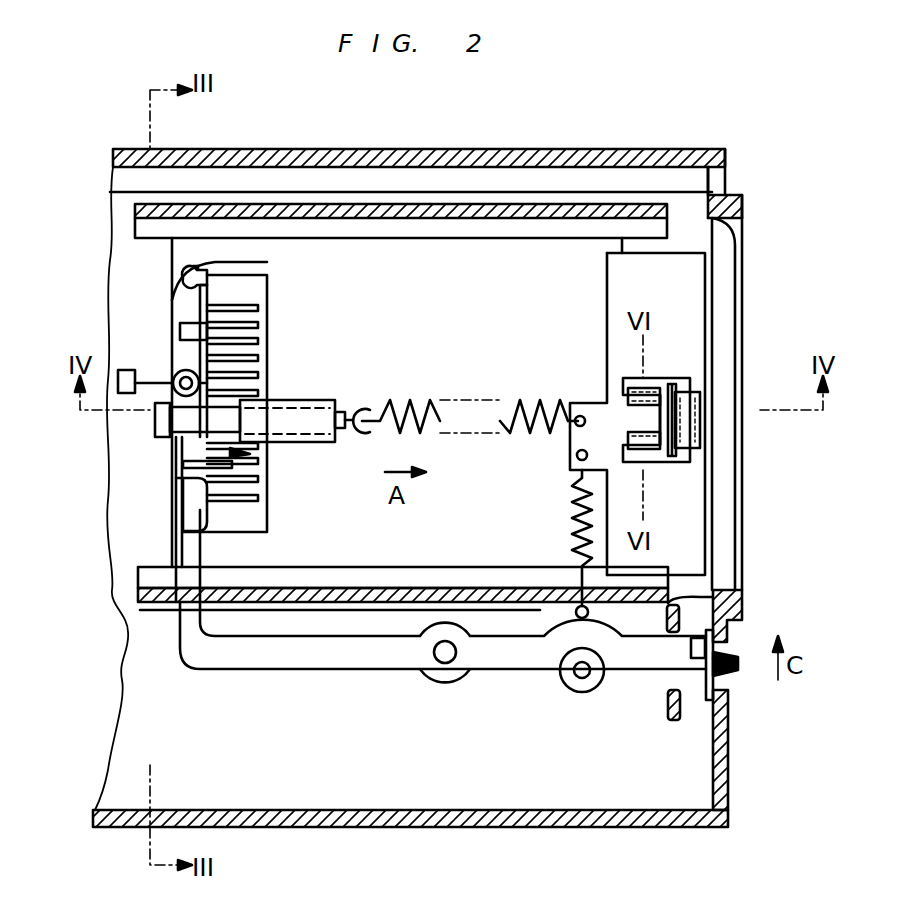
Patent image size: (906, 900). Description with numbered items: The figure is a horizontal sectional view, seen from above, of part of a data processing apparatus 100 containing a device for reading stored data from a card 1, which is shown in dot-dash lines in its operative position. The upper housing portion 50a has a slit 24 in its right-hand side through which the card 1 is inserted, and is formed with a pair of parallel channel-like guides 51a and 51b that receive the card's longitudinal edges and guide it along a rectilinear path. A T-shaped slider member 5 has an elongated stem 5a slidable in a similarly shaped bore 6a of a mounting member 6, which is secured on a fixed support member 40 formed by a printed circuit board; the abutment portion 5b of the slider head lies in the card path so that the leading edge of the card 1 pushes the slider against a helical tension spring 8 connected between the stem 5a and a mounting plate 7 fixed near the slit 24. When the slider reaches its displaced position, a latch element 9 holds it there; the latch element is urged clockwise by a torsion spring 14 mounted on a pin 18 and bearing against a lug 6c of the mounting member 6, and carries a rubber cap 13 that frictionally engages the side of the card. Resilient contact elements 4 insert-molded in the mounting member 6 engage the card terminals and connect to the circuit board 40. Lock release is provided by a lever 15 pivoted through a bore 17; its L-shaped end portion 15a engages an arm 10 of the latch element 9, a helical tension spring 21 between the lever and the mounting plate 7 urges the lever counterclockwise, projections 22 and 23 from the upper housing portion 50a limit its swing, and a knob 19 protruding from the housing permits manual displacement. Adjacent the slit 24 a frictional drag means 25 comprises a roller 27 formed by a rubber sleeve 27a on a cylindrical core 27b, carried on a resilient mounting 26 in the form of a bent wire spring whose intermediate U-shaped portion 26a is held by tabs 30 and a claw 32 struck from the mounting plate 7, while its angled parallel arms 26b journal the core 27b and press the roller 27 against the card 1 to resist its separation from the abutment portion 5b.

The data processing apparatus 100 is at (412, 143).
The card 1 is at (456, 258).
The upper housing portion 50a is at (698, 150).
The guide 51a is at (622, 203).
The guide 51b is at (165, 625).
The slit 24 is at (742, 222).
The fixed support member 40 is at (150, 590).
The projection 22 is at (742, 590).
The knob 19 is at (742, 640).
The projection 23 is at (668, 712).
The lever 15 is at (266, 668).
The end portion 15a is at (172, 520).
The bore 17 is at (440, 658).
The mounting member 6 is at (270, 355).
The lug 6c is at (215, 270).
The bore 6a is at (300, 408).
The contact elements 4 is at (262, 318).
The latch element 9 is at (235, 462).
The arm 10 is at (240, 480).
The torsion spring 14 is at (175, 283).
The pin 18 is at (180, 328).
The rubber cap 13 is at (178, 368).
The slider member 5 is at (90, 455).
The stem 5a is at (177, 490).
The abutment portion 5b is at (175, 430).
The helical tension spring 8 is at (432, 402).
The mounting plate 7 is at (604, 262).
The tabs 30 is at (612, 345).
The claw 32 is at (622, 392).
The helical tension spring 21 is at (575, 518).
The frictional drag means 25 is at (670, 470).
The resilient mounting 26 is at (812, 285).
The intermediate U-shaped portion 26a is at (660, 392).
The arms 26b is at (640, 378).
The roller 27 is at (812, 435).
The rubber sleeve 27a is at (700, 440).
The core 27b is at (690, 455).